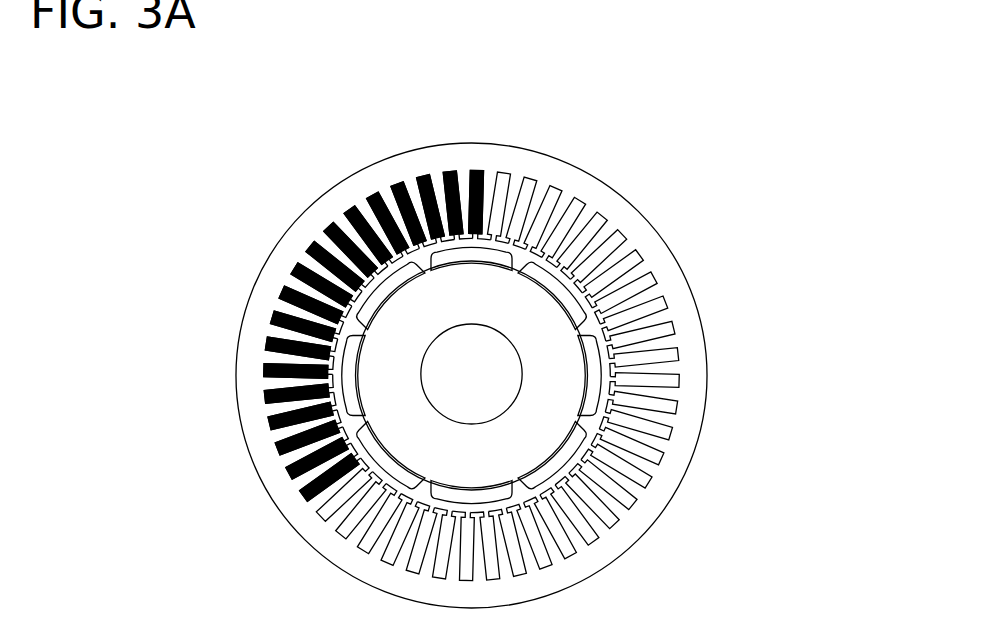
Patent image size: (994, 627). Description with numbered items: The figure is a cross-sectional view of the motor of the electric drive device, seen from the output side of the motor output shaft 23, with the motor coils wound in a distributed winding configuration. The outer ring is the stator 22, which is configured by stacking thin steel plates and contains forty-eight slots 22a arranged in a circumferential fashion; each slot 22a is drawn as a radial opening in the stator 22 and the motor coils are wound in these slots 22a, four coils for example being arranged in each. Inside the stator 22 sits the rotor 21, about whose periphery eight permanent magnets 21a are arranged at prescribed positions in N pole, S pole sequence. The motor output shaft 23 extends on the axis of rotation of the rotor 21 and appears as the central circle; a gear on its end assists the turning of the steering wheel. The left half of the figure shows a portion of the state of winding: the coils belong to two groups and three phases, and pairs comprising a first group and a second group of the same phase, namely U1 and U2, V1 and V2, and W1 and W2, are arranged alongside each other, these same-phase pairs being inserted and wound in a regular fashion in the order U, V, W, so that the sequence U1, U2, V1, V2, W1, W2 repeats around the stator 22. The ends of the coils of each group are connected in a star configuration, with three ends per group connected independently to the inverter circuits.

The rotor 21 is at (577, 423).
The permanent magnet 21a is at (363, 353).
The stator 22 is at (618, 192).
The slot 22a is at (640, 253).
The motor output shaft 23 is at (492, 420).
The U-phase first group coil U1 is at (476, 170).
The U-phase second group coil U2 is at (450, 172).
The V-phase first group coil V1 is at (423, 176).
The V-phase second group coil V2 is at (398, 184).
The W-phase first group coil W1 is at (373, 195).
The W-phase second group coil W2 is at (350, 210).